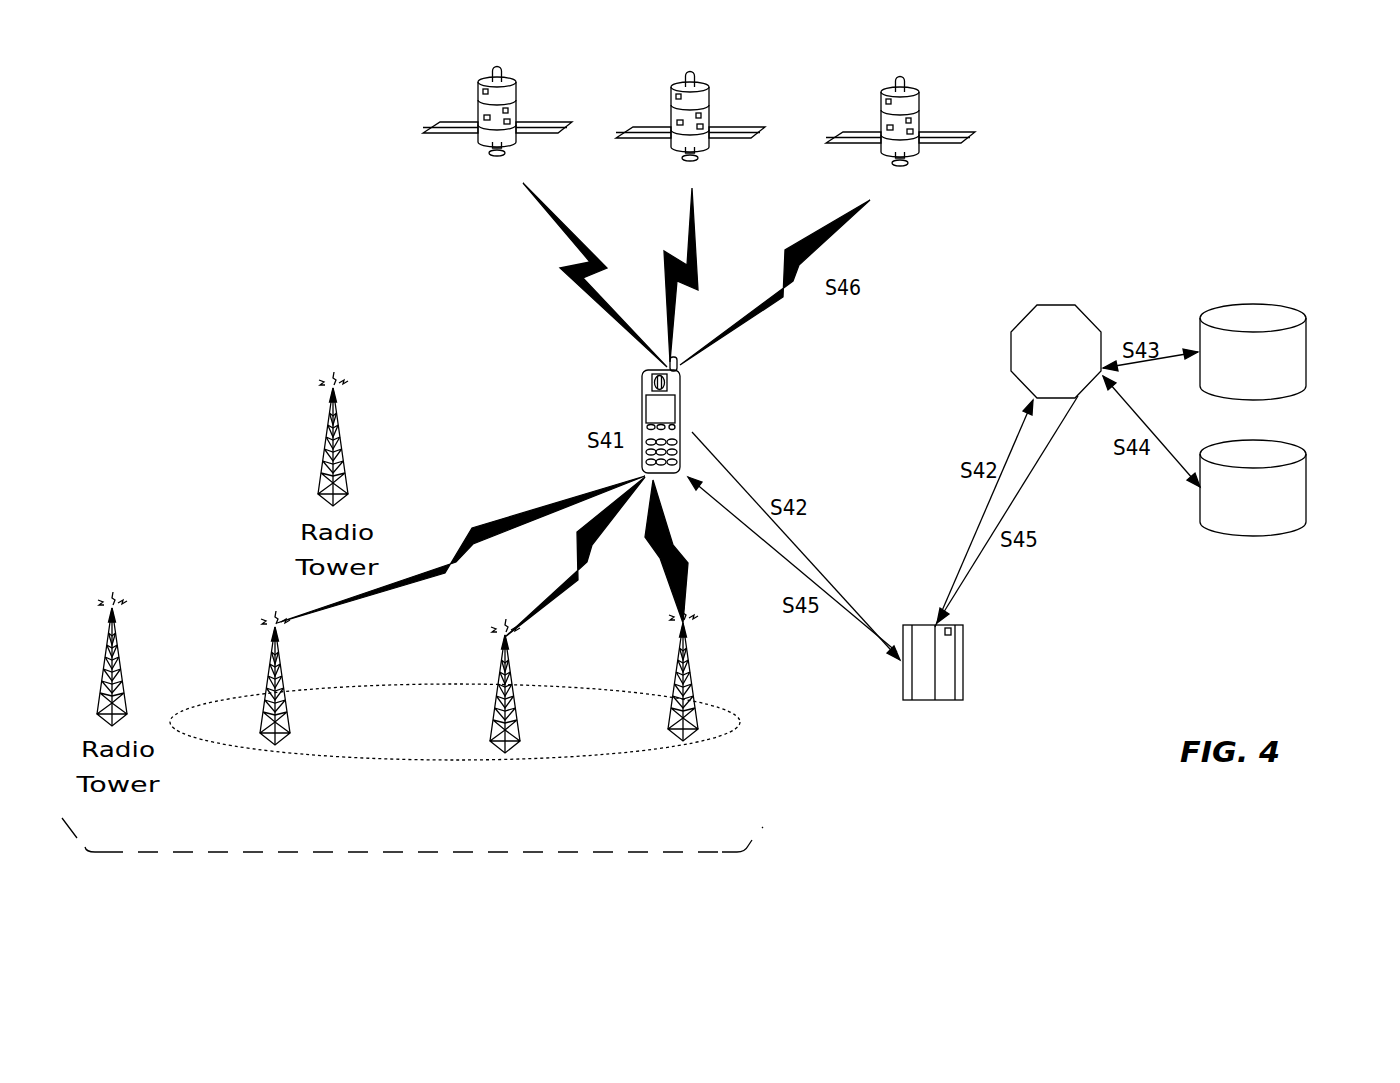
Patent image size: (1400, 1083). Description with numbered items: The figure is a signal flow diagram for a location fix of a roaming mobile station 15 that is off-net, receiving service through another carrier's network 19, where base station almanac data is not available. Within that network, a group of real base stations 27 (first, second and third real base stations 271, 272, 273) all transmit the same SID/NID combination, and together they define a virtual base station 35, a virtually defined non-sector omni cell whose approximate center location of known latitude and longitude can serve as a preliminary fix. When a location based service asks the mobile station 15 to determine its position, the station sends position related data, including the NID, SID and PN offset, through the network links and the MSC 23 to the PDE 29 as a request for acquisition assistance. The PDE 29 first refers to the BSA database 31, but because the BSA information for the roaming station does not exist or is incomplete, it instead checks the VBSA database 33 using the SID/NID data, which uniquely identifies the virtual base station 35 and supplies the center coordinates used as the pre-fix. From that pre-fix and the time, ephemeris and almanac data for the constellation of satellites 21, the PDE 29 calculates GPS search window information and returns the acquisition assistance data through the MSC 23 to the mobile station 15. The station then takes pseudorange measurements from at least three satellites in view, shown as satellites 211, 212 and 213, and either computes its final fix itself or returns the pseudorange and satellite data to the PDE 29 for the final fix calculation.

The constellation of satellites 21 is at (681, 137).
The first satellite 211 is at (460, 122).
The second satellite 212 is at (655, 127).
The third satellite 213 is at (860, 135).
The mobile station 15 is at (680, 428).
The real base stations 27 is at (498, 717).
The first real base station 271 is at (281, 681).
The second real base station 272 is at (499, 675).
The third real base station 273 is at (696, 714).
The virtual base station 35 is at (230, 692).
The another carrier's network 19 is at (412, 858).
The MSC 23 is at (963, 660).
The PDE 29 is at (1011, 356).
The BSA database 31 is at (1307, 352).
The VBSA database 33 is at (1307, 487).